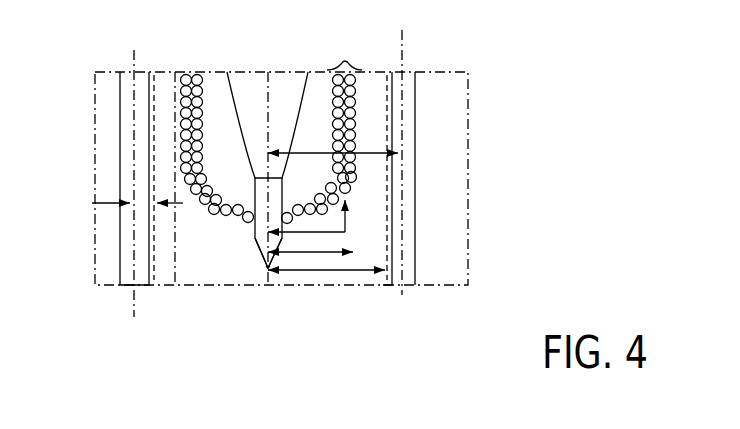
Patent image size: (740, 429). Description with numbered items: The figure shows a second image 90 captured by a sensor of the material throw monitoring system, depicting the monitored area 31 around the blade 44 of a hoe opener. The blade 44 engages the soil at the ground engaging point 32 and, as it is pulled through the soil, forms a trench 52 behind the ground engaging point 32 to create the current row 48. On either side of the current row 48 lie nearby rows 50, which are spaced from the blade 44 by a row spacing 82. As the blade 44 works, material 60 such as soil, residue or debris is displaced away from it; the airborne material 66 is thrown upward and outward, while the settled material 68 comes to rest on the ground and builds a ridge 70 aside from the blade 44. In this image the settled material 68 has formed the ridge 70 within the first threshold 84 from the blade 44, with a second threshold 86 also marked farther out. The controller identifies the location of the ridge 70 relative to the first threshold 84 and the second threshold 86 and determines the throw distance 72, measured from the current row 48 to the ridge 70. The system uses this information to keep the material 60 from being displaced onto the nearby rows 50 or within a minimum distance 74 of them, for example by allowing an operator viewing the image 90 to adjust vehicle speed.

The area 31 is at (442, 208).
The ground engaging point 32 is at (258, 266).
The blade 44 is at (255, 187).
The current row 48 is at (268, 276).
The nearby rows 50 is at (122, 270).
The trench 52 is at (117, 248).
The material 60 is at (326, 209).
The airborne material 66 is at (223, 226).
The settled material 68 is at (356, 107).
The ridge 70 is at (344, 51).
The throw distance 72 is at (320, 232).
The minimum distance 74 is at (110, 203).
The row spacing 82 is at (326, 152).
The first threshold 84 is at (330, 253).
The second threshold 86 is at (327, 274).
The second image 90 is at (542, 88).